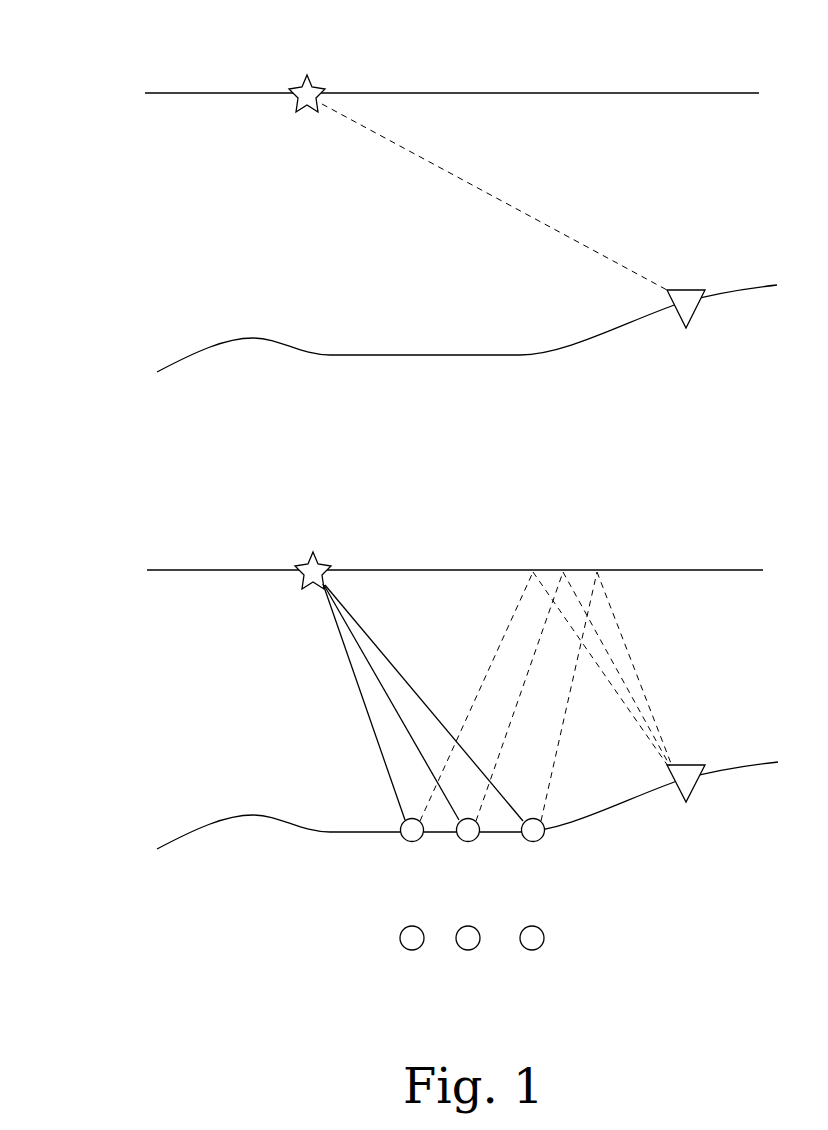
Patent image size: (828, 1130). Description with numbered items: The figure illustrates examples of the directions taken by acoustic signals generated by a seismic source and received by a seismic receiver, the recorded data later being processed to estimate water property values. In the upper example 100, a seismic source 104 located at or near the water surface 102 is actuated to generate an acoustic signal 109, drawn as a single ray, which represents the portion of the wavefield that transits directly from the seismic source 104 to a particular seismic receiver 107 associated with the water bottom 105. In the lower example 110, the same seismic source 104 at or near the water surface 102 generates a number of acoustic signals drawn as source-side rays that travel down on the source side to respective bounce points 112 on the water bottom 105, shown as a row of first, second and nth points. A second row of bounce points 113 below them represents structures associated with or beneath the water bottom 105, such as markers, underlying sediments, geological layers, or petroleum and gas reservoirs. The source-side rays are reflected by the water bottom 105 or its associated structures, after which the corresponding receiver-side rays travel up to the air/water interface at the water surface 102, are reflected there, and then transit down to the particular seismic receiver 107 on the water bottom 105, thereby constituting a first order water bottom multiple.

The direct arrival example 100 is at (100, 57).
The water surface 102 is at (172, 92).
The seismic source 104 is at (305, 75).
The water bottom 105 is at (209, 347).
The seismic receiver 107 is at (683, 289).
The acoustic signal 109 is at (486, 195).
The water bottom multiple example 110 is at (113, 527).
The bounce points 112 is at (539, 870).
The bounce points 113 is at (539, 986).